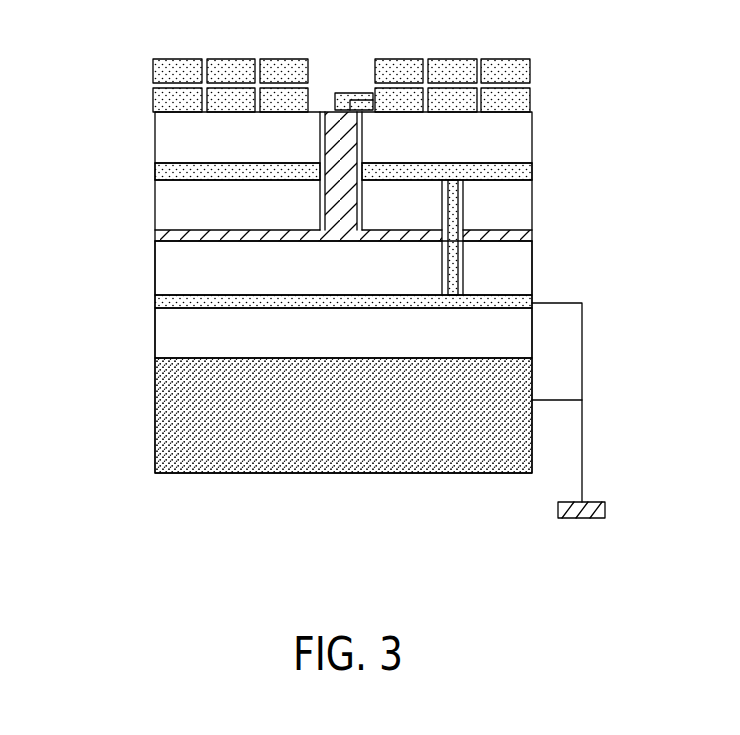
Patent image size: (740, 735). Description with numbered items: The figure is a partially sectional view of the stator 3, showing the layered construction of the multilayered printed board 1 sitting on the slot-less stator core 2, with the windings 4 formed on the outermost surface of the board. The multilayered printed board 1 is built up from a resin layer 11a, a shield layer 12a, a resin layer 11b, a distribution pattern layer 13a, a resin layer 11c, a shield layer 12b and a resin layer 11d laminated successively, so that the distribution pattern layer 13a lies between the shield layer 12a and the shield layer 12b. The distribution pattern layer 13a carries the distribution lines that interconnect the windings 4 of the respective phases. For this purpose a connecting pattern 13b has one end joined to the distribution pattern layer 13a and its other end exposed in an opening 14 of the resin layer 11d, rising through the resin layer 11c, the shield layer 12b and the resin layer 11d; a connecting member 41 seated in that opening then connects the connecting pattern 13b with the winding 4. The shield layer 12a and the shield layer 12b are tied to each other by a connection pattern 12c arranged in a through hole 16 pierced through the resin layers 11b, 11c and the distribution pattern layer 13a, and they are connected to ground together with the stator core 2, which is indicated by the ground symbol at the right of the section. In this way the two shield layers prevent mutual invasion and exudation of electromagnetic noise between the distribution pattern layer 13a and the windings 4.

The multilayered printed board 1 is at (70, 90).
The stator core 2 is at (165, 405).
The stator 3 is at (375, 495).
The windings 4 is at (279, 61).
The resin layer 11a is at (165, 340).
The resin layer 11b is at (165, 275).
The resin layer 11c is at (167, 212).
The resin layer 11d is at (165, 143).
The shield layer 12a is at (160, 302).
The shield layer 12b is at (162, 171).
The connection pattern 12c is at (469, 254).
The distribution pattern layer 13a is at (163, 237).
The connecting pattern 13b is at (341, 139).
The opening 14 is at (323, 103).
The through hole 16 is at (473, 199).
The connecting member 41 is at (352, 94).